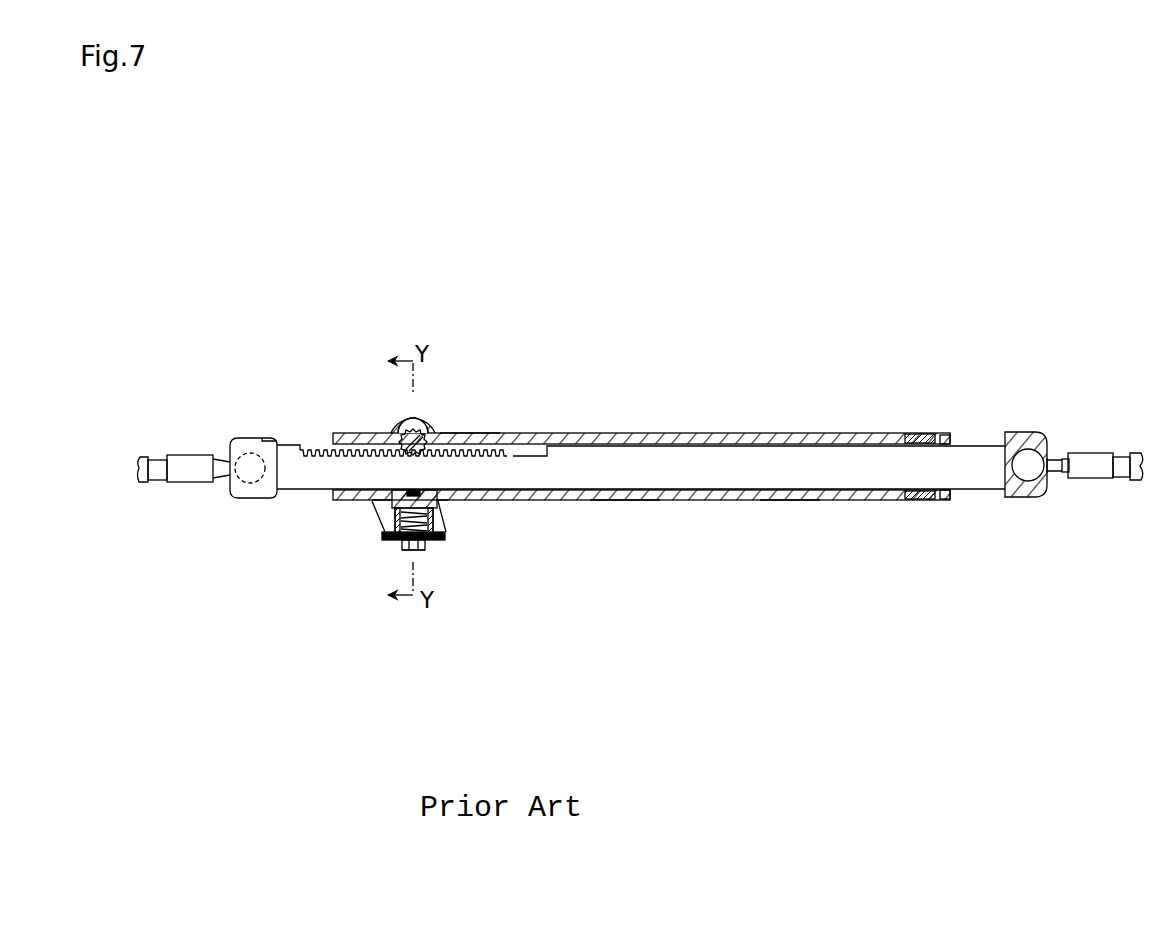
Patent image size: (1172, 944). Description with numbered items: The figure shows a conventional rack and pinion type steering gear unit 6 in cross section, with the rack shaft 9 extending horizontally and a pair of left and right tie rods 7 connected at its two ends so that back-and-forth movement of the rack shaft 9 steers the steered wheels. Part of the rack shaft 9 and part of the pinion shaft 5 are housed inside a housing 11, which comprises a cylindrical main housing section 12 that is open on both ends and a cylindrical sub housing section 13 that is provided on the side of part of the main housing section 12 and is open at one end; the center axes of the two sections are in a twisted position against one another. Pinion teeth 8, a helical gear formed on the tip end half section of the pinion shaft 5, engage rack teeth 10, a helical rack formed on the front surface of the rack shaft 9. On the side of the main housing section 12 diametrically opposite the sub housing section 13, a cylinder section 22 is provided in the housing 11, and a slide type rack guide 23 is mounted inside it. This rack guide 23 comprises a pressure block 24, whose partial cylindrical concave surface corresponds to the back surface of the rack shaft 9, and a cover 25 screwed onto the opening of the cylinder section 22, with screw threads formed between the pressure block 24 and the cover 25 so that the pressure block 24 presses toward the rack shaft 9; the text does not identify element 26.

The pinion shaft 5 is at (432, 420).
The rack and pinion type steering gear unit 6 is at (537, 428).
The tie rods 7 is at (193, 470).
The pinion teeth 8 is at (410, 430).
The rack shaft 9 is at (683, 465).
The rack teeth 10 is at (463, 435).
The housing 11 is at (620, 503).
The main housing section 12 is at (788, 498).
The sub housing section 13 is at (400, 424).
The cylinder section 22 is at (397, 508).
The slide type rack guide 23 is at (434, 545).
The pressure block 24 is at (390, 518).
The cover 25 is at (398, 540).
The yoke plug 26 is at (425, 542).